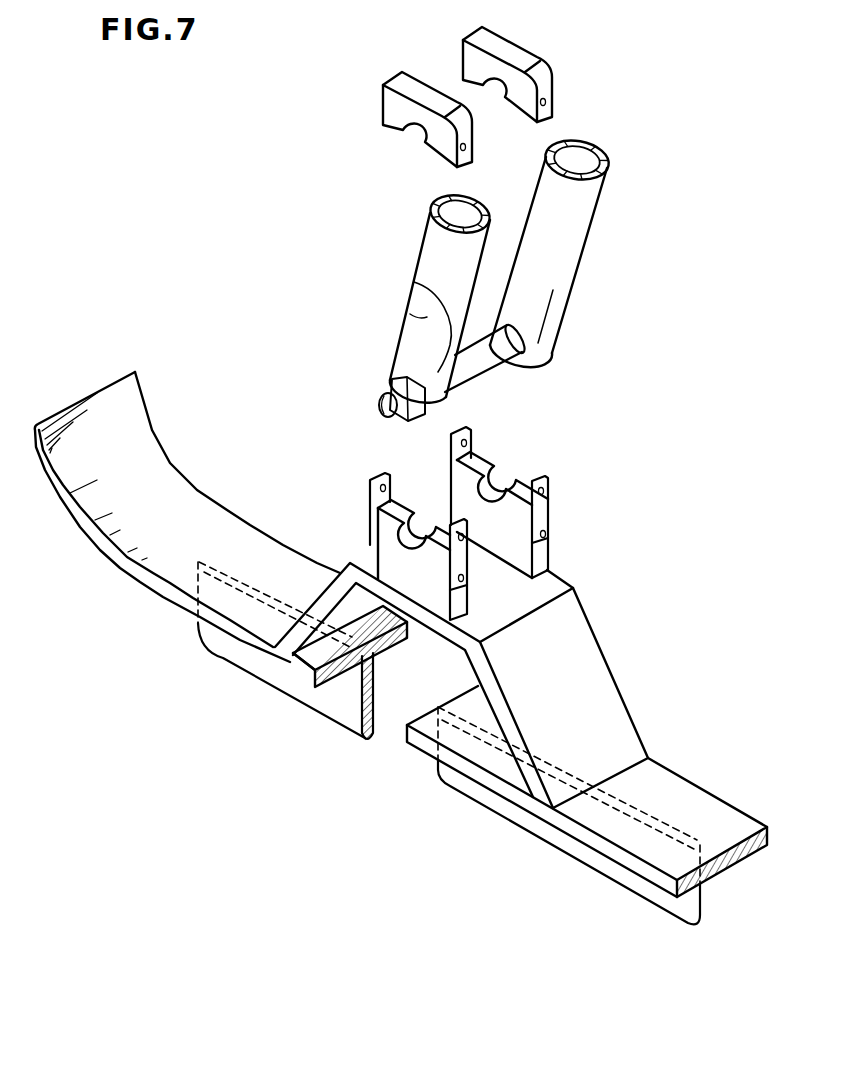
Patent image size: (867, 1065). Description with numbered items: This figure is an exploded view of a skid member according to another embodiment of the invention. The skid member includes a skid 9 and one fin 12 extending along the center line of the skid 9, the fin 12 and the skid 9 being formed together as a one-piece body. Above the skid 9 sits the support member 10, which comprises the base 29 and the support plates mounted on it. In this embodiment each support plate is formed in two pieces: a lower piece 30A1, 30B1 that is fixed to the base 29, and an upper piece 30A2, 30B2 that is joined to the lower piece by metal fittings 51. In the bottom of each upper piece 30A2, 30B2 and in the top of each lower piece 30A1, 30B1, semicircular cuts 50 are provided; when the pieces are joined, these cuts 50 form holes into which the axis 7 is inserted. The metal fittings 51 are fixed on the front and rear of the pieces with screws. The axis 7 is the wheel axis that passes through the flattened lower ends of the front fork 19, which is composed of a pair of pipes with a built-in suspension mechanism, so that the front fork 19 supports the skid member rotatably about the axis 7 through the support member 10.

The wheel axis 7 is at (500, 360).
The skid 9 is at (675, 792).
The support member 10 is at (403, 450).
The fin 12 is at (485, 800).
The front fork 19 is at (414, 266).
The base 29 is at (594, 678).
The lower piece of support plate 30A1 is at (318, 697).
The upper piece of support plate 30A2 is at (393, 108).
The lower piece of support plate 30B1 is at (513, 550).
The upper piece of support plate 30B2 is at (510, 67).
The semicircular cuts 50 is at (417, 146).
The metal fittings 51 is at (377, 478).